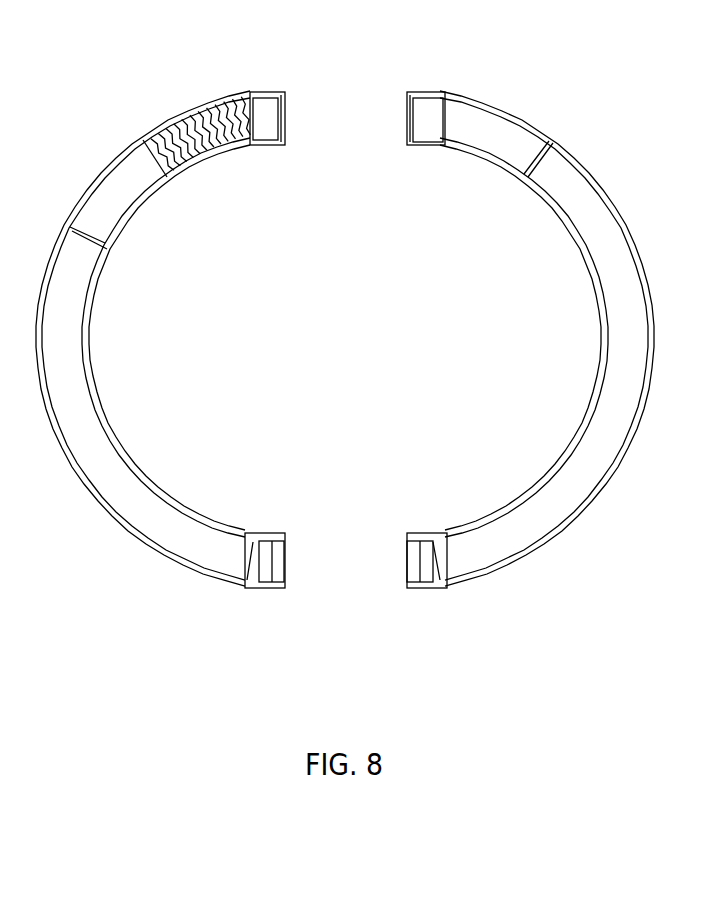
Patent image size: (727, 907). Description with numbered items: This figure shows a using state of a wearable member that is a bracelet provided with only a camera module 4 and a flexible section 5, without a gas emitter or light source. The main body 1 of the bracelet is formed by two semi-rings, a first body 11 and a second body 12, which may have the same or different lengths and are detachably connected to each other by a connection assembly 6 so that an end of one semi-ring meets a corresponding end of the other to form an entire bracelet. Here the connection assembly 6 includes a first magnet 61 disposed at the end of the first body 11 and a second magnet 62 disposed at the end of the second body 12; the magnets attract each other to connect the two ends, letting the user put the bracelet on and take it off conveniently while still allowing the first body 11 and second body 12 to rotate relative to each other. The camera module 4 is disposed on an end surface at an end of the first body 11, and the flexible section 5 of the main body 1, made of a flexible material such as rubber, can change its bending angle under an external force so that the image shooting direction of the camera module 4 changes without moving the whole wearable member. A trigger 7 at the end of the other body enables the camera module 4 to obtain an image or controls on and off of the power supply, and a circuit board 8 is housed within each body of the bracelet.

The main body 1 is at (345, 338).
The first body 11 is at (142, 470).
The second body 12 is at (557, 462).
The camera module 4 is at (260, 118).
The flexible section 5 is at (183, 130).
The trigger 7 is at (425, 113).
The circuit board 8 is at (120, 190).
The connection assembly 6 is at (346, 629).
The first magnet 61 is at (273, 580).
The second magnet 62 is at (420, 580).